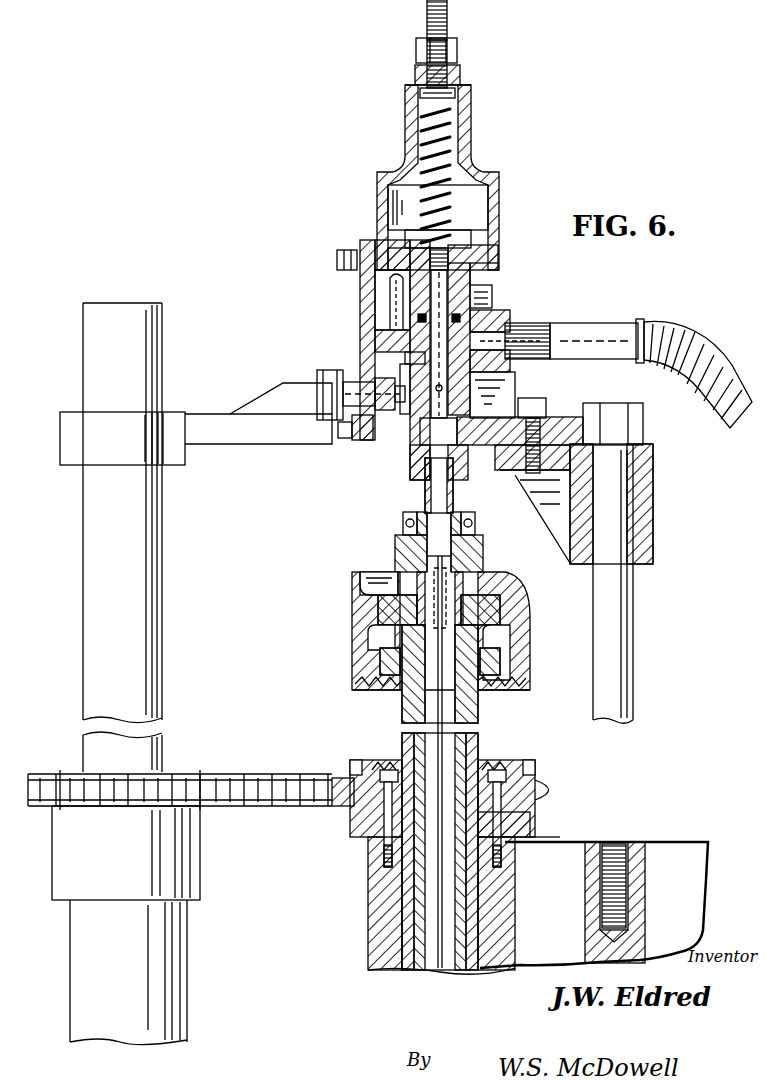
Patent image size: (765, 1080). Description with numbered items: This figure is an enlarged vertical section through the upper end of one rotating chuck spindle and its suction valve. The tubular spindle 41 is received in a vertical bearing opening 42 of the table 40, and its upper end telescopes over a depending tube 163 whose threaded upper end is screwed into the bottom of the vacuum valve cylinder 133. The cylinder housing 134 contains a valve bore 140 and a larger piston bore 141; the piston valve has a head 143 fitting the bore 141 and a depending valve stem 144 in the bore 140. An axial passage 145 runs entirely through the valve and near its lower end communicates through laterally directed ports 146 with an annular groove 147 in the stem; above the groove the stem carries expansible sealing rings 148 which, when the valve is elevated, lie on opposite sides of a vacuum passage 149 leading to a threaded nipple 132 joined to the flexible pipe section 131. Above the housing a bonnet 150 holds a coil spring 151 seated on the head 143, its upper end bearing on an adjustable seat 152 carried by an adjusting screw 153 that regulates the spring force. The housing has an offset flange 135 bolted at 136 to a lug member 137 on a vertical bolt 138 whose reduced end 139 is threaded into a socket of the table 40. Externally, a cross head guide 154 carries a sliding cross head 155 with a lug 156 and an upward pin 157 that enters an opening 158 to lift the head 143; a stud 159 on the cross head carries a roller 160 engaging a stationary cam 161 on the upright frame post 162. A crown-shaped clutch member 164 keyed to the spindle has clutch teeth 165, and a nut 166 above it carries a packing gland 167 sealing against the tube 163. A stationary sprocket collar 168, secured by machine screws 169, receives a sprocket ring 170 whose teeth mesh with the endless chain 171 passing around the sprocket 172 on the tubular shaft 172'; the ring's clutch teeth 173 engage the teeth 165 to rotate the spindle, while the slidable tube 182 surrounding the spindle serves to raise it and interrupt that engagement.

The adjusting screw 153 is at (448, 15).
The adjustable seat 152 is at (458, 78).
The coil spring 151 is at (455, 118).
The bonnet 150 is at (470, 160).
The piston bore 141 is at (490, 205).
The valve head 143 is at (495, 232).
The cylinder housing 134 is at (498, 252).
The opening 158 is at (357, 254).
The cross head guide 154 is at (368, 268).
The pin 157 is at (392, 289).
The cross head 155 is at (376, 300).
The vacuum valve cylinder 133 is at (495, 293).
The valve bore 140 is at (493, 300).
The axial passage 145 is at (437, 300).
The lug 156 is at (377, 340).
The expansible sealing rings 148 is at (412, 366).
The vacuum passage 149 is at (530, 322).
The threaded nipple 132 is at (610, 325).
The flexible pipe section 131 is at (700, 352).
The annular groove 147 is at (468, 397).
The offset flange 135 is at (535, 430).
The bolt 136 is at (562, 428).
The lug member 137 is at (640, 500).
The vertical bolt 138 is at (615, 665).
The stud 159 is at (330, 386).
The roller 160 is at (322, 398).
The stationary cam 161 is at (283, 440).
The laterally directed ports 146 is at (365, 441).
The valve stem 144 is at (408, 443).
The depending tube 163 is at (425, 490).
The packing gland 167 is at (405, 524).
The nut 166 is at (475, 548).
The tubular spindle 41 is at (455, 585).
The crown-shaped clutch member 164 is at (362, 602).
The clutch teeth 165 is at (392, 680).
The slidable tube 182 is at (480, 748).
The clutch teeth 173 is at (372, 762).
The stationary sprocket collar 168 is at (506, 790).
The machine screw 169 is at (508, 820).
The sprocket ring 170 is at (343, 802).
The endless chain 171 is at (260, 808).
The sprocket 172 is at (134, 814).
The tubular shaft 172' is at (159, 972).
The frame post 162 is at (150, 583).
The bearing opening 42 is at (392, 952).
The reduced end 139 is at (627, 850).
The table 40 is at (680, 858).